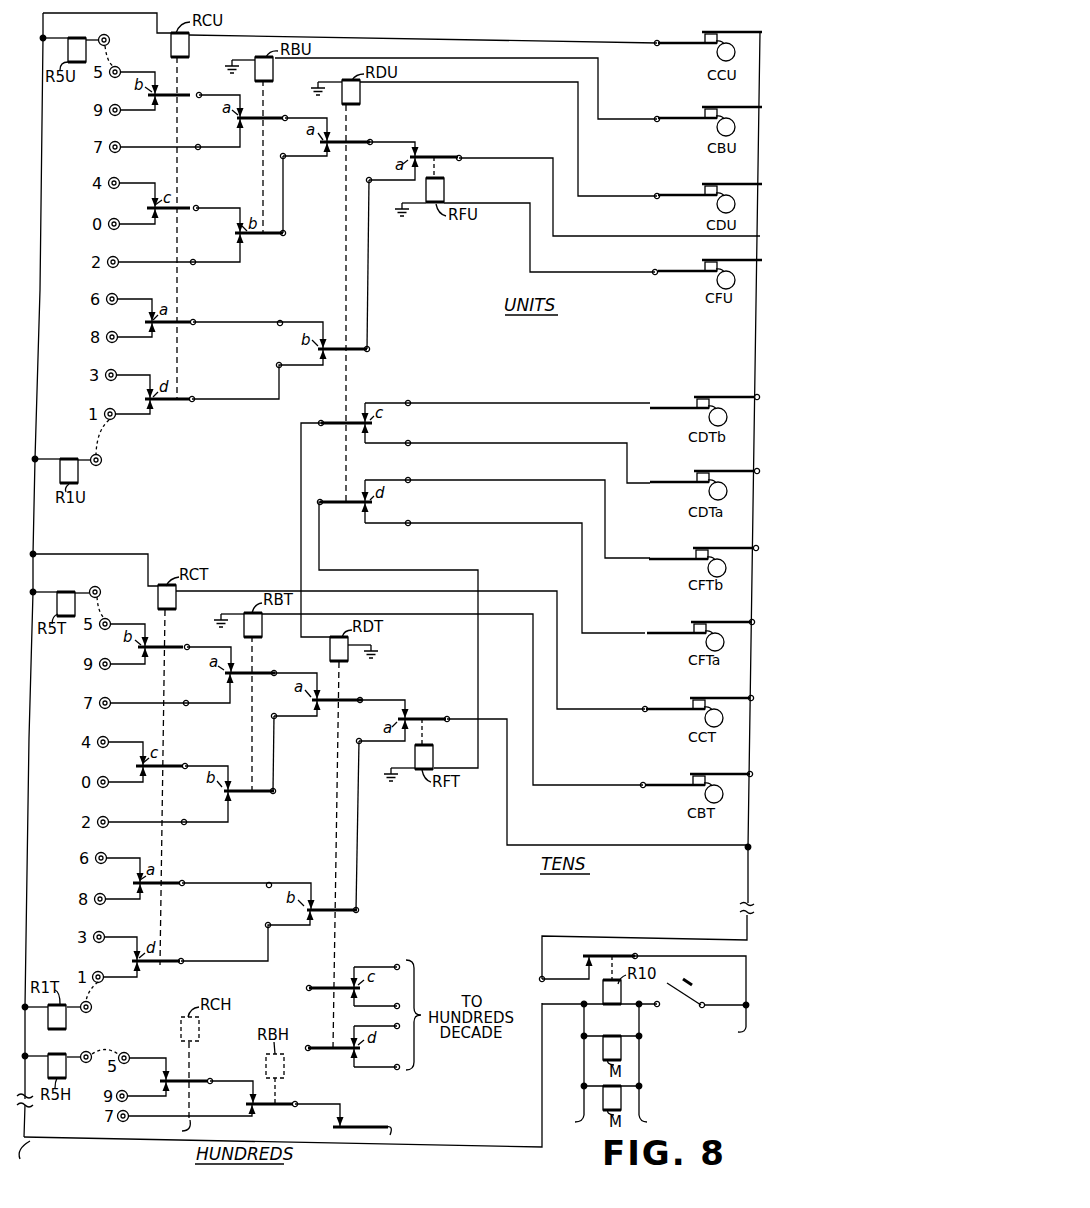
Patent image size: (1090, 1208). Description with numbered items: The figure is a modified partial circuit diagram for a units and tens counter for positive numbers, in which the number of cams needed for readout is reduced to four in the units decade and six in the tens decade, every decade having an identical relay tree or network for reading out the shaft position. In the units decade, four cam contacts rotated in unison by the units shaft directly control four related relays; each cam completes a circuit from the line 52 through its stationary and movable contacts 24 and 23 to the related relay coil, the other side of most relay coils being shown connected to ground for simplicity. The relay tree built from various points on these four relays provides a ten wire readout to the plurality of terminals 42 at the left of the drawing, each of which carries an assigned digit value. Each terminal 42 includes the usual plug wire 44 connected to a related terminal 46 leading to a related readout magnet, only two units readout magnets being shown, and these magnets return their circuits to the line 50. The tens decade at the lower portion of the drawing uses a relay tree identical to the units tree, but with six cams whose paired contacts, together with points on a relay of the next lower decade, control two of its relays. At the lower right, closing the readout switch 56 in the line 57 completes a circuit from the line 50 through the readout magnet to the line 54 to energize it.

The movable contact 23 is at (686, 46).
The stationary contact 24 is at (718, 32).
The terminal 42 is at (121, 141).
The plug wire 44 is at (114, 57).
The related terminal 46 is at (103, 35).
The line 50 is at (29, 740).
The line 52 is at (757, 362).
The line 54 is at (745, 993).
The readout switch 56 is at (690, 1000).
The line 57 is at (490, 1148).